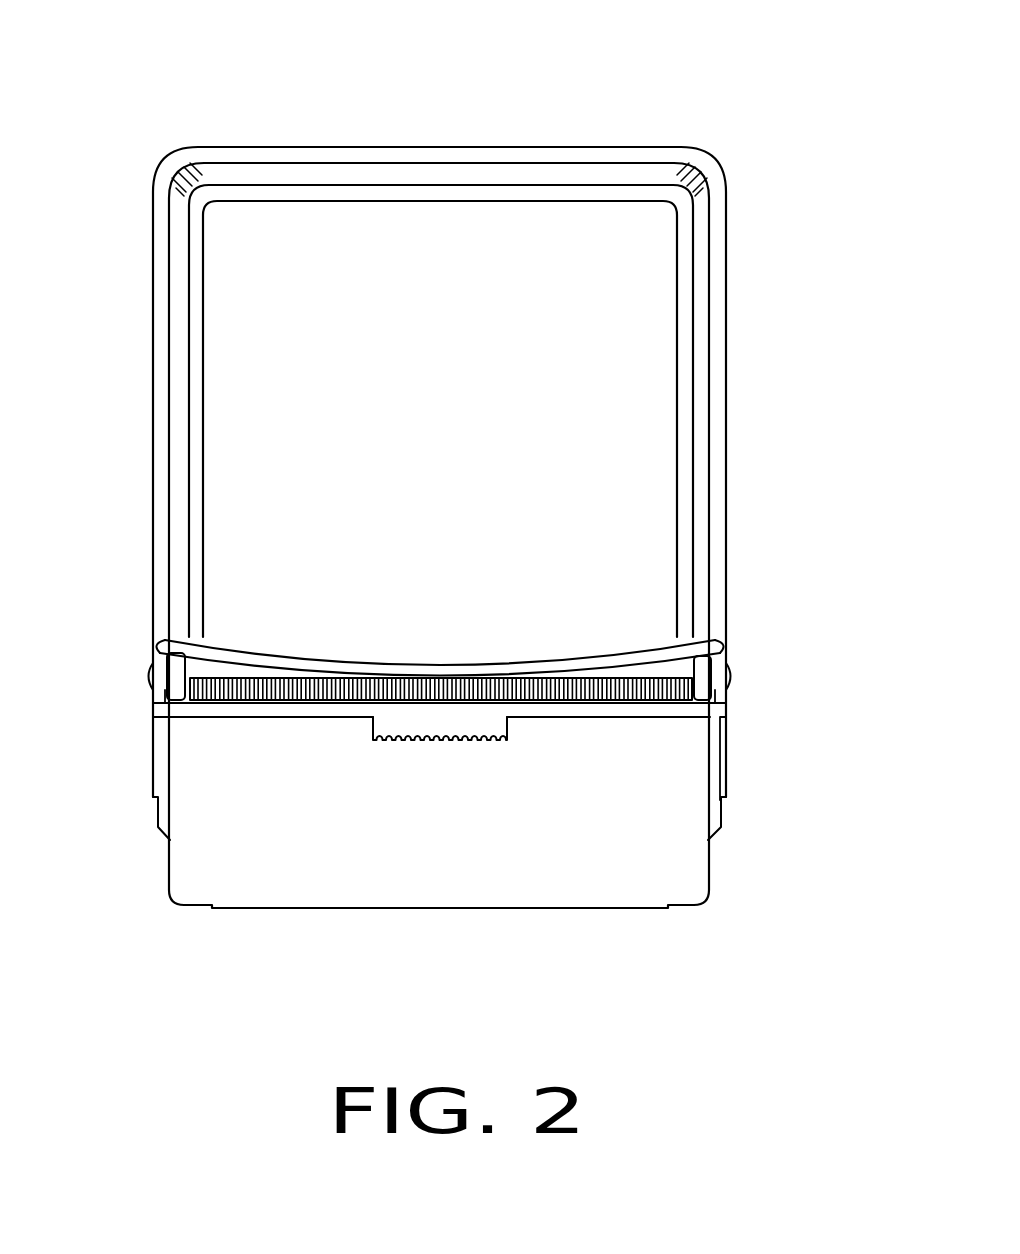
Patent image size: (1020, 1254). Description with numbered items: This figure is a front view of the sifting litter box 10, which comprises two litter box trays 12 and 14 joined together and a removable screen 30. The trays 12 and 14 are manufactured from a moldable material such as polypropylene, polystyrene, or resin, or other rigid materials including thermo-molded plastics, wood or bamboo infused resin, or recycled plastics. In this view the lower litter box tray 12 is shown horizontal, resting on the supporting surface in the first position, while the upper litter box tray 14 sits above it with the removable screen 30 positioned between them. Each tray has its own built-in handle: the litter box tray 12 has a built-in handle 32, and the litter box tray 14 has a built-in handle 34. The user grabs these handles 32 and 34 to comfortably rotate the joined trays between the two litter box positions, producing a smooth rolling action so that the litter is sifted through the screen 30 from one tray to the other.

The sifting litter box 10 is at (128, 903).
The litter box tray 12 is at (395, 885).
The litter box tray 14 is at (355, 335).
The removable screen 30 is at (440, 668).
The built-in handle 32 is at (440, 745).
The built-in handle 34 is at (460, 143).